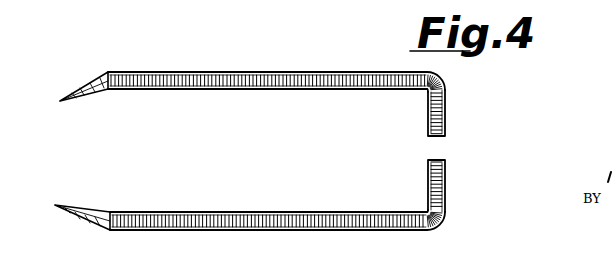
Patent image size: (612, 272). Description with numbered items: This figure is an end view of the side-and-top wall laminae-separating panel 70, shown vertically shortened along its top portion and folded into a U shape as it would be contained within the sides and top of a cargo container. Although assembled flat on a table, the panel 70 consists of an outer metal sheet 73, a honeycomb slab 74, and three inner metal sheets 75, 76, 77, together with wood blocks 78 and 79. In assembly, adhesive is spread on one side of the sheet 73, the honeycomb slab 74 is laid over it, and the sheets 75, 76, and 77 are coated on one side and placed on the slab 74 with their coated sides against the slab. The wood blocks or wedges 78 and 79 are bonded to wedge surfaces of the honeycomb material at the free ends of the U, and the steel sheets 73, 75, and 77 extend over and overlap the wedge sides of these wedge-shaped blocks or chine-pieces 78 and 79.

The panel 70 is at (250, 138).
The outer metal sheet 73 is at (280, 72).
The honeycomb slab 74 is at (213, 90).
The metal sheet 75 is at (304, 89).
The metal sheet 76 is at (425, 176).
The metal sheet 77 is at (270, 206).
The wood block 78 is at (84, 93).
The wood block 79 is at (93, 212).